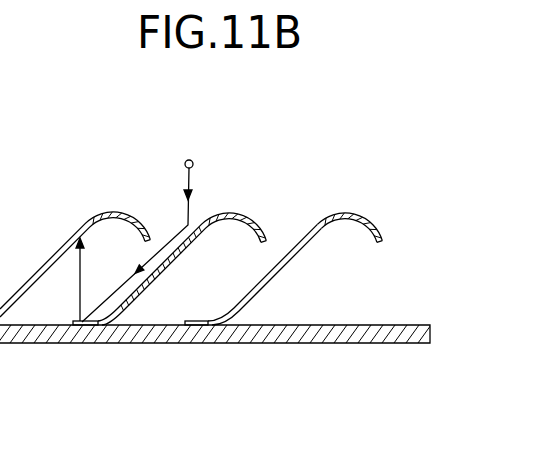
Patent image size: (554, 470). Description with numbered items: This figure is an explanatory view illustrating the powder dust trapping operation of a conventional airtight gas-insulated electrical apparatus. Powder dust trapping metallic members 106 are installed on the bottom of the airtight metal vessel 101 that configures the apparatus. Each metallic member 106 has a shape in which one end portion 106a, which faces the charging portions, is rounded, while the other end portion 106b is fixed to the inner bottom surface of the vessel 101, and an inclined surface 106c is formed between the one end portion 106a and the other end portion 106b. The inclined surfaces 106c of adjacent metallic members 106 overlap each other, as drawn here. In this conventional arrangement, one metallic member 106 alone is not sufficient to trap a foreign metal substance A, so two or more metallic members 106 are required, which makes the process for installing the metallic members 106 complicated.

The airtight metal vessel 101 is at (342, 343).
The powder dust trapping metallic member 106 is at (292, 279).
The one end portion 106a is at (360, 213).
The other end portion 106b is at (207, 326).
The inclined surface 106c is at (274, 276).
The foreign metal substance A is at (190, 160).